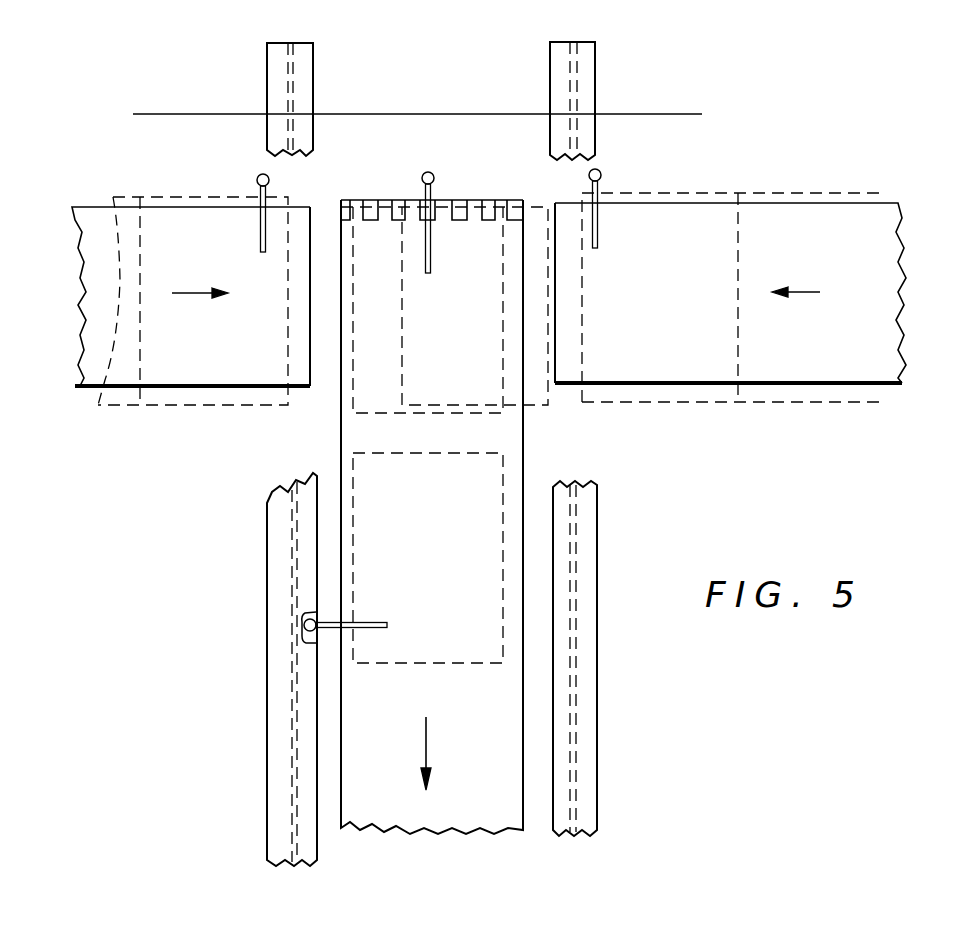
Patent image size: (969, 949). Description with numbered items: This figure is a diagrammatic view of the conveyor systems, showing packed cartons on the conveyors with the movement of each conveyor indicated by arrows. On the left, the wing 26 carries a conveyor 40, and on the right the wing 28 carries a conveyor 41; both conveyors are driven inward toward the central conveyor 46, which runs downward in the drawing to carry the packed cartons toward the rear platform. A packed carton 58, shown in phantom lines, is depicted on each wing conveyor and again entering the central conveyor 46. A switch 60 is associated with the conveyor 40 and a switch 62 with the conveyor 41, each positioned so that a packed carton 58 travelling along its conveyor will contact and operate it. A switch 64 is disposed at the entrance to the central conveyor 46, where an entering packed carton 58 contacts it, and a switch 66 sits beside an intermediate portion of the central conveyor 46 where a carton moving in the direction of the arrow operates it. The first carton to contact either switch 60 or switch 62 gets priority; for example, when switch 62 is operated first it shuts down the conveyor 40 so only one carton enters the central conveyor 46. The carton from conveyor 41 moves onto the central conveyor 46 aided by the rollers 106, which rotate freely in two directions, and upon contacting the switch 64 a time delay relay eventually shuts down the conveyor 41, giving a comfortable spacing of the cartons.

The wing 26 is at (243, 392).
The wing 28 is at (717, 392).
The conveyor 40 is at (100, 289).
The conveyor 41 is at (875, 297).
The central conveyor 46 is at (493, 497).
The packed carton 58 is at (758, 192).
The switch 60 is at (269, 178).
The switch 62 is at (601, 173).
The switch 64 is at (433, 172).
The switch 66 is at (370, 618).
The rollers 106 is at (483, 202).